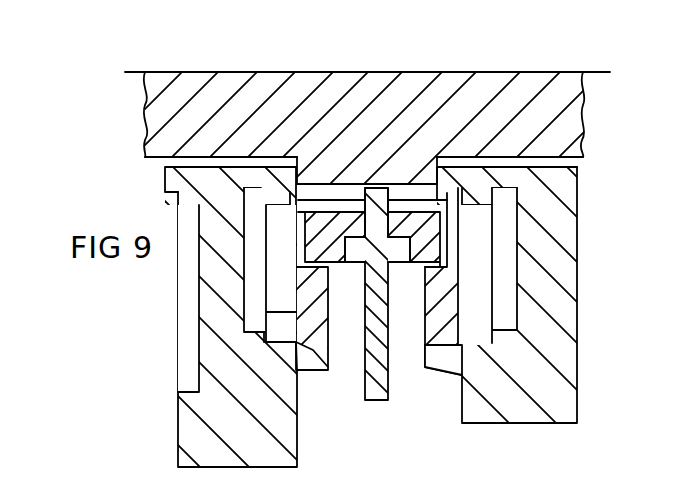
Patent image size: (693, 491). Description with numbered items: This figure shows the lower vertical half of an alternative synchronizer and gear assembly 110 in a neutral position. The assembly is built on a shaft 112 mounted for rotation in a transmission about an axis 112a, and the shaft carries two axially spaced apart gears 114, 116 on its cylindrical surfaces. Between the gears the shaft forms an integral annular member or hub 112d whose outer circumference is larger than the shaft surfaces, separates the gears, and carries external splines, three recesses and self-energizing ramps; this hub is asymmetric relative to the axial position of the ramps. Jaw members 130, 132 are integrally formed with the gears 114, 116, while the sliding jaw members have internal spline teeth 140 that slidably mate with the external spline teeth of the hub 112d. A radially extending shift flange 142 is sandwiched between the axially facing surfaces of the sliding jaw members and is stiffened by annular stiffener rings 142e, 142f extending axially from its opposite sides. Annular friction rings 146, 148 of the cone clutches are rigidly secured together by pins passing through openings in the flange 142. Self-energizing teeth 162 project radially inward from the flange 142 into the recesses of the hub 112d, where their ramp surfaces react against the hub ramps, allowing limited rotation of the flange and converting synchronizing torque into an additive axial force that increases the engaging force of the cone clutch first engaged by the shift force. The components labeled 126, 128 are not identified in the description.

The synchronizer and gear assembly 110 is at (346, 265).
The shaft 112 is at (596, 126).
The axis 112a is at (590, 75).
The annular member or hub 112d is at (318, 168).
The gear 114 is at (200, 343).
The gear 116 is at (577, 337).
The left gap / slot 126 is at (312, 375).
The right gap / slot 128 is at (443, 377).
The jaw member 130 is at (278, 203).
The jaw member 132 is at (474, 208).
The internal spline teeth 140 is at (440, 205).
The shift flange 142 is at (373, 265).
The annular stiffener ring 142e is at (357, 263).
The annular stiffener ring 142f is at (407, 263).
The friction ring 146 is at (293, 312).
The friction ring 148 is at (452, 277).
The self-energizing teeth 162 is at (384, 172).